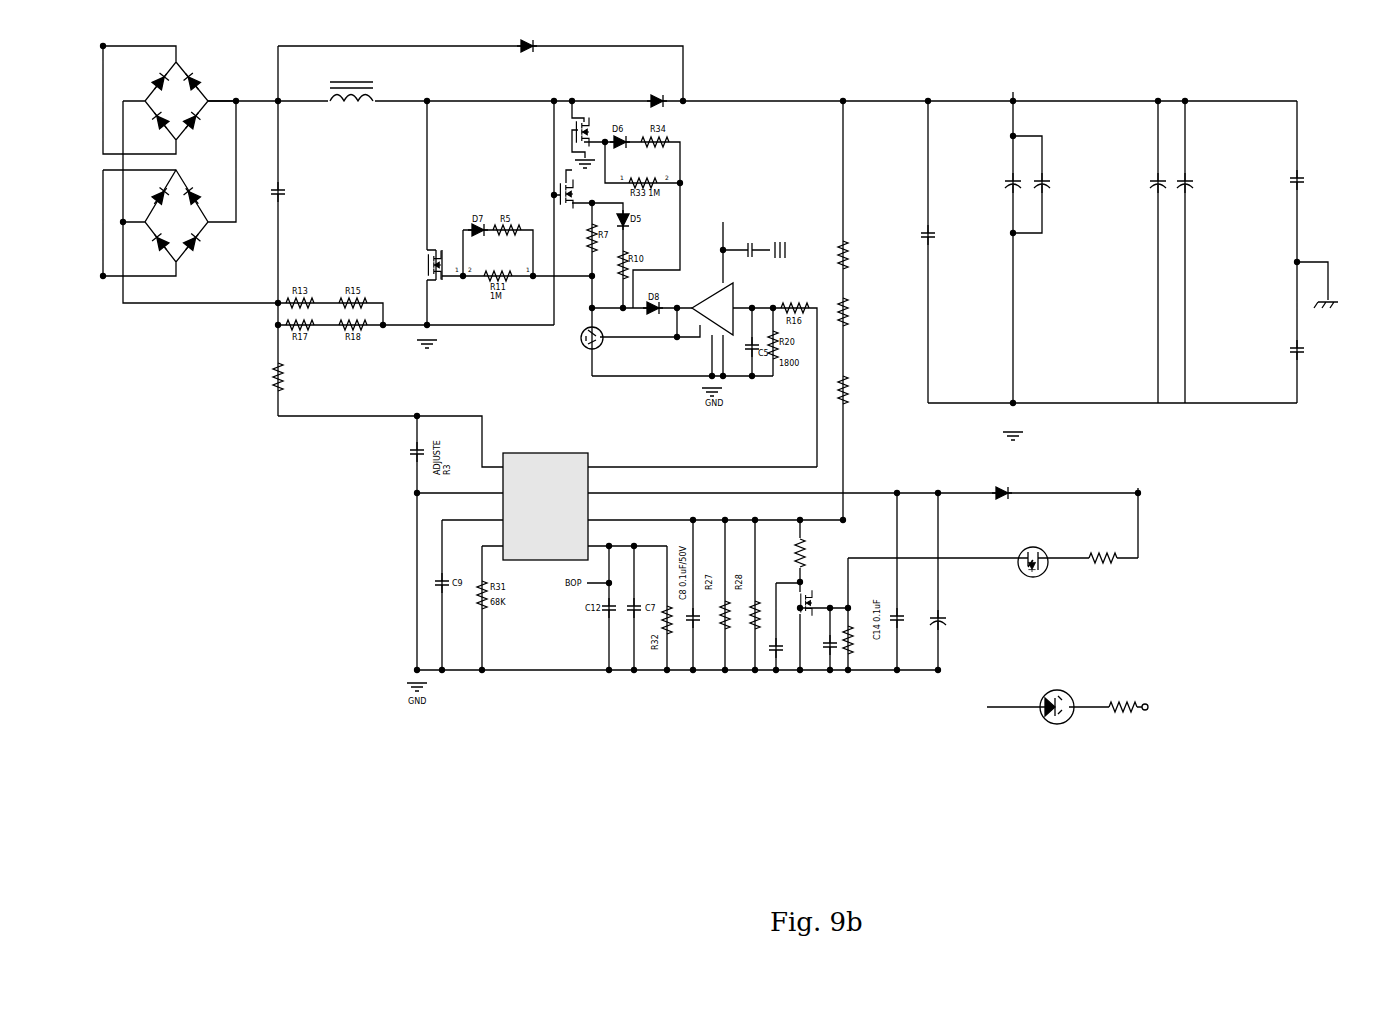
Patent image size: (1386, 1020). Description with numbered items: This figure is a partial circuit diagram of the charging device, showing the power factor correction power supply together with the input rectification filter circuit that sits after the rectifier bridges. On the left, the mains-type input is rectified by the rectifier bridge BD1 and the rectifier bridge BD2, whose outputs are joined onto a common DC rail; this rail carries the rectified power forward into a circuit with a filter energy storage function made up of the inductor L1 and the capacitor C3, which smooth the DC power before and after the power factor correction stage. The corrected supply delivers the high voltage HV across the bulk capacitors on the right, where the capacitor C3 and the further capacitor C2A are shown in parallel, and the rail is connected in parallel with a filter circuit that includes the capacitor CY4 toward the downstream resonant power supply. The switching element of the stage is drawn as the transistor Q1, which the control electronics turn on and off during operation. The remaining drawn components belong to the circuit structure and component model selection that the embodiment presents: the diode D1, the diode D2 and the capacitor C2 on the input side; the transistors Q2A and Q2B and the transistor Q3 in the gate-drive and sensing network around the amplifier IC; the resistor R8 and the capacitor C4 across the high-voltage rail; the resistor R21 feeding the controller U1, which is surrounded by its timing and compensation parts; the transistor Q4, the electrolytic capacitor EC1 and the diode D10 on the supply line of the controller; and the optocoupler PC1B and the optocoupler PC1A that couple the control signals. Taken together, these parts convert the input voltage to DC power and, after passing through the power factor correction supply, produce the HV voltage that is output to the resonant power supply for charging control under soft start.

The rectifier bridge BD1 is at (169, 95).
The rectifier bridge BD2 is at (170, 189).
The inductor L1 is at (353, 93).
The diode 1N5408 D1 is at (525, 36).
The diode 15A600V D2 is at (654, 104).
The capacitor C2 is at (273, 231).
The transistor Q1 is at (431, 230).
The MOSFET Q2A is at (562, 189).
The MOSFET Q2B is at (577, 140).
The transistor S8050 Q3 is at (603, 348).
The op-amp MC33072 IC is at (754, 339).
The resistor chain R8 is at (854, 310).
The capacitor C4 is at (936, 252).
The capacitor C3 is at (1112, 269).
The electrolytic capacitors C2A/C3A C2A is at (1169, 252).
The capacitor CY4 is at (1314, 252).
The resistor R21 is at (299, 377).
The PFC controller ICE2PCS02 U1 is at (790, 509).
The MOSFET Q4 is at (889, 613).
The electrolytic capacitor EC1 is at (959, 618).
The diode D10 is at (1076, 516).
The optocoupler PC1B is at (1064, 555).
The optocoupler PC1A is at (1045, 722).